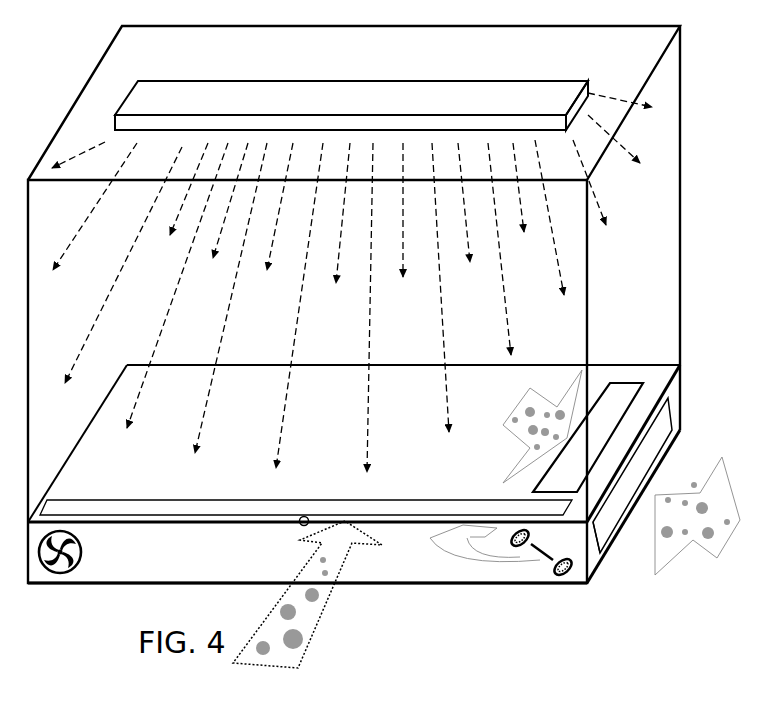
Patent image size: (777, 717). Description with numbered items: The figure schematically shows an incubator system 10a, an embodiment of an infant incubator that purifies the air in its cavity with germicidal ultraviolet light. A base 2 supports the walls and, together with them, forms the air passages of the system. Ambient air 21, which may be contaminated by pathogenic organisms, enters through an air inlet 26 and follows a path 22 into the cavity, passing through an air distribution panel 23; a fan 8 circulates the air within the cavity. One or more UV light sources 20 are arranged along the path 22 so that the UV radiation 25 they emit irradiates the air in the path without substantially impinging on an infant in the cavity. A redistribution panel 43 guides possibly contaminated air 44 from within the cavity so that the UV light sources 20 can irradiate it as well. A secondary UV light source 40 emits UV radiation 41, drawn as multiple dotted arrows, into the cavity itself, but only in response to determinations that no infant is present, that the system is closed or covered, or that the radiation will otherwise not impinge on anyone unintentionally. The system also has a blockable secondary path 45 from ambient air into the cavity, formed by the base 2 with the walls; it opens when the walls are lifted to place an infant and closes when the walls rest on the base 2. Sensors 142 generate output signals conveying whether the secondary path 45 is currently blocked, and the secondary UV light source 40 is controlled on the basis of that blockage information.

The base 2 is at (24, 552).
The incubator system 10a is at (71, 607).
The fan 8 is at (82, 538).
The UV light source 20 is at (548, 576).
The ambient air 21 is at (663, 557).
The path 22 is at (465, 547).
The air distribution panel 23 is at (157, 508).
The UV radiation 25 is at (518, 553).
The air inlet 26 is at (602, 533).
The secondary UV light source 40 is at (147, 100).
The UV radiation 41 is at (352, 282).
The redistribution panel 43 is at (624, 394).
The air 44 is at (512, 437).
The secondary path 45 is at (322, 620).
The sensor 142 is at (299, 524).